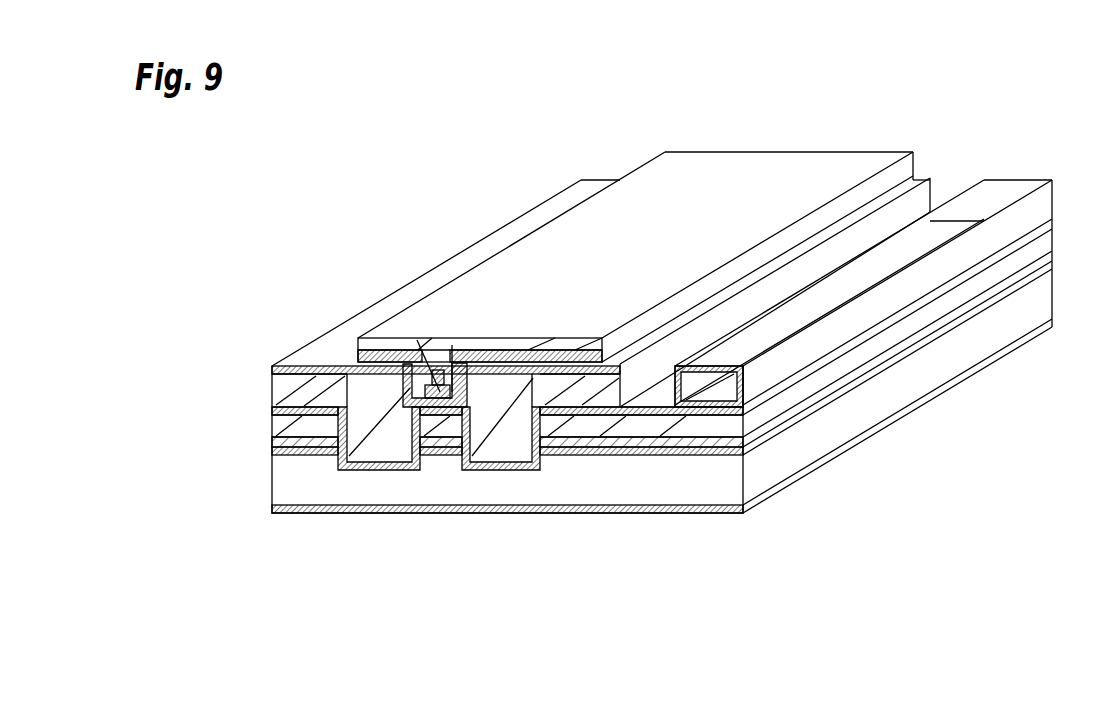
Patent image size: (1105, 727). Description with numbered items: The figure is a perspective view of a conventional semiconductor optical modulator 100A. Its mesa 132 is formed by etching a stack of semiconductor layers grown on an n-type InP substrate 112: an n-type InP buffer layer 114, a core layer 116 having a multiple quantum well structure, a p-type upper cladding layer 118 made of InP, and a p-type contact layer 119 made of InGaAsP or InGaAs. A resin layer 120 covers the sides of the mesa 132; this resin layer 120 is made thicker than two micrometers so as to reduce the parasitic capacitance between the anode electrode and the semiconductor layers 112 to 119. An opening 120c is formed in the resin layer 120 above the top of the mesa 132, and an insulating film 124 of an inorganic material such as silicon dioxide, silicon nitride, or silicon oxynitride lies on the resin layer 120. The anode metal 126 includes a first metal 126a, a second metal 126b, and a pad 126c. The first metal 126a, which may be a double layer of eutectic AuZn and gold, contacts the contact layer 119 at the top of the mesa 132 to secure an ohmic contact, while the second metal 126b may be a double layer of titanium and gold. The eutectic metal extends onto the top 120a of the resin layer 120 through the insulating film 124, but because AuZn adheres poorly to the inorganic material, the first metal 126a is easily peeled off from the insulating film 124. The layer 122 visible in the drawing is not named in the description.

The semiconductor optical modulator 100A is at (1098, 43).
The n-type InP substrate 112 is at (270, 482).
The n-type InP buffer layer 114 is at (663, 457).
The core layer 116 is at (645, 440).
The p-type upper cladding layer 118 is at (270, 433).
The p-type contact layer 119 is at (270, 416).
The resin layer 120 is at (352, 470).
The top of the resin layer 120a is at (527, 362).
The opening 120c is at (465, 372).
The insulating layer 122 is at (270, 408).
The insulating film 124 is at (270, 372).
The anode metal 126 is at (785, 150).
The first metal 126a is at (405, 355).
The second metal 126b is at (388, 350).
The pad 126c is at (682, 213).
The mesa 132 is at (431, 466).